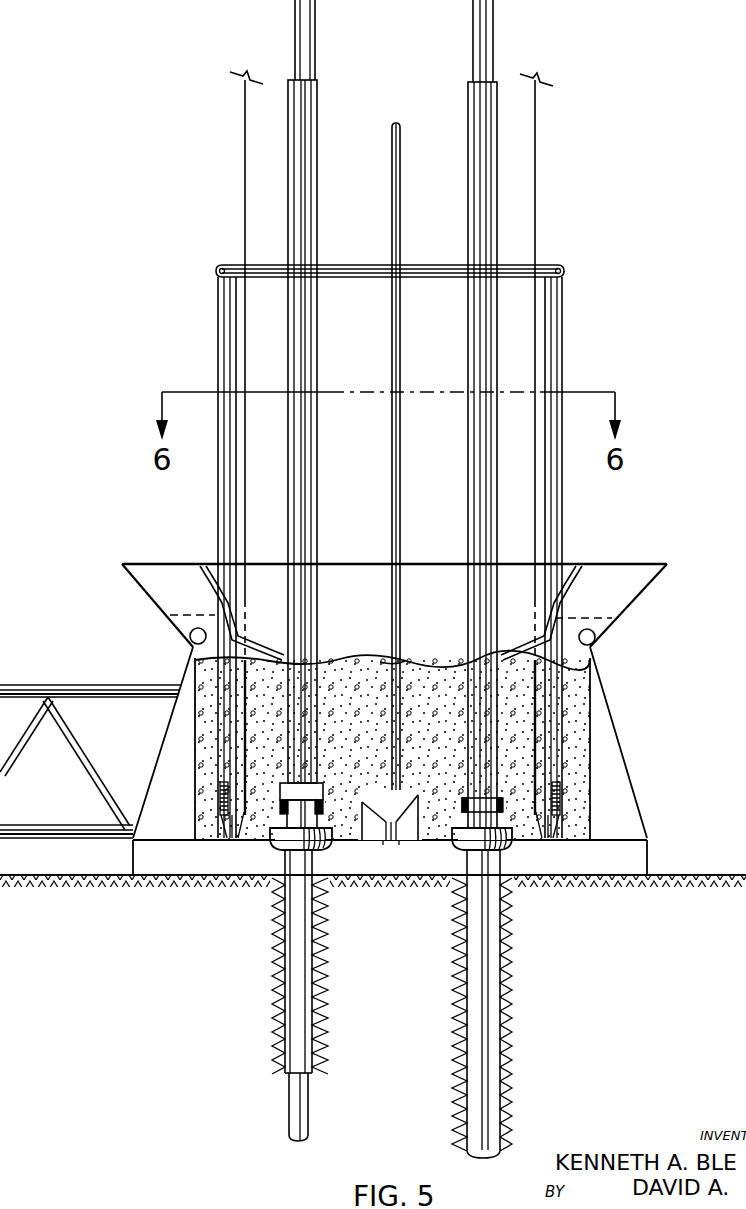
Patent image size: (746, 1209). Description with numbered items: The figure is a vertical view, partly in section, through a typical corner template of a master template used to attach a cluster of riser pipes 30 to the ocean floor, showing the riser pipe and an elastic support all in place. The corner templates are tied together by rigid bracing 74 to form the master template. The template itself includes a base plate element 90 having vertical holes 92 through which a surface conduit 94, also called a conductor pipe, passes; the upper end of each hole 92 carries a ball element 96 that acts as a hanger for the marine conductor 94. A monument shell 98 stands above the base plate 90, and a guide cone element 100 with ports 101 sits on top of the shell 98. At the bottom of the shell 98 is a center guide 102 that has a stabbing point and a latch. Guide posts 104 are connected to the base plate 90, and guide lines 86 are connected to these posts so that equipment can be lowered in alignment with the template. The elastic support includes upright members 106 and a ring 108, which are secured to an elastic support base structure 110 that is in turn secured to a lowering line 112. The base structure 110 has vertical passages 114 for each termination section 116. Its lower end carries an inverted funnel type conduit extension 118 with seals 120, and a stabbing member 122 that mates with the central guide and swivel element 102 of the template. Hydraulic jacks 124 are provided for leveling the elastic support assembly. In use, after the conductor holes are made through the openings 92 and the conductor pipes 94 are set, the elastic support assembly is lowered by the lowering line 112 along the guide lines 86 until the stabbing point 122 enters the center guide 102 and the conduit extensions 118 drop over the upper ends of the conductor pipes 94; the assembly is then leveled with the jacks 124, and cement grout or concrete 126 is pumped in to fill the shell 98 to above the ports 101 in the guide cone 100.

The riser pipe 30 is at (314, 32).
The termination section 116 is at (305, 98).
The lowering line 112 is at (401, 152).
The guide line 86 is at (537, 197).
The ring 108 is at (407, 267).
The upright member 106 is at (563, 341).
The guide cone element 100 is at (637, 575).
The port 101 is at (598, 636).
The vertical passage 114 is at (313, 650).
The elastic support base structure 110 is at (455, 658).
The guide post 104 is at (533, 682).
The rigid bracing 74 is at (140, 690).
The monument shell 98 is at (605, 741).
The cement grout or concrete 126 is at (442, 746).
The hydraulic jack 124 is at (205, 785).
The inverted funnel type conduit extension 118 is at (510, 798).
The base plate element 90 is at (630, 855).
The ball element 96 is at (293, 838).
The stabbing member 122 is at (399, 845).
The center guide 102 is at (404, 845).
The seal 120 is at (513, 832).
The vertical hole 92 is at (498, 872).
The surface conduit 94 is at (303, 968).